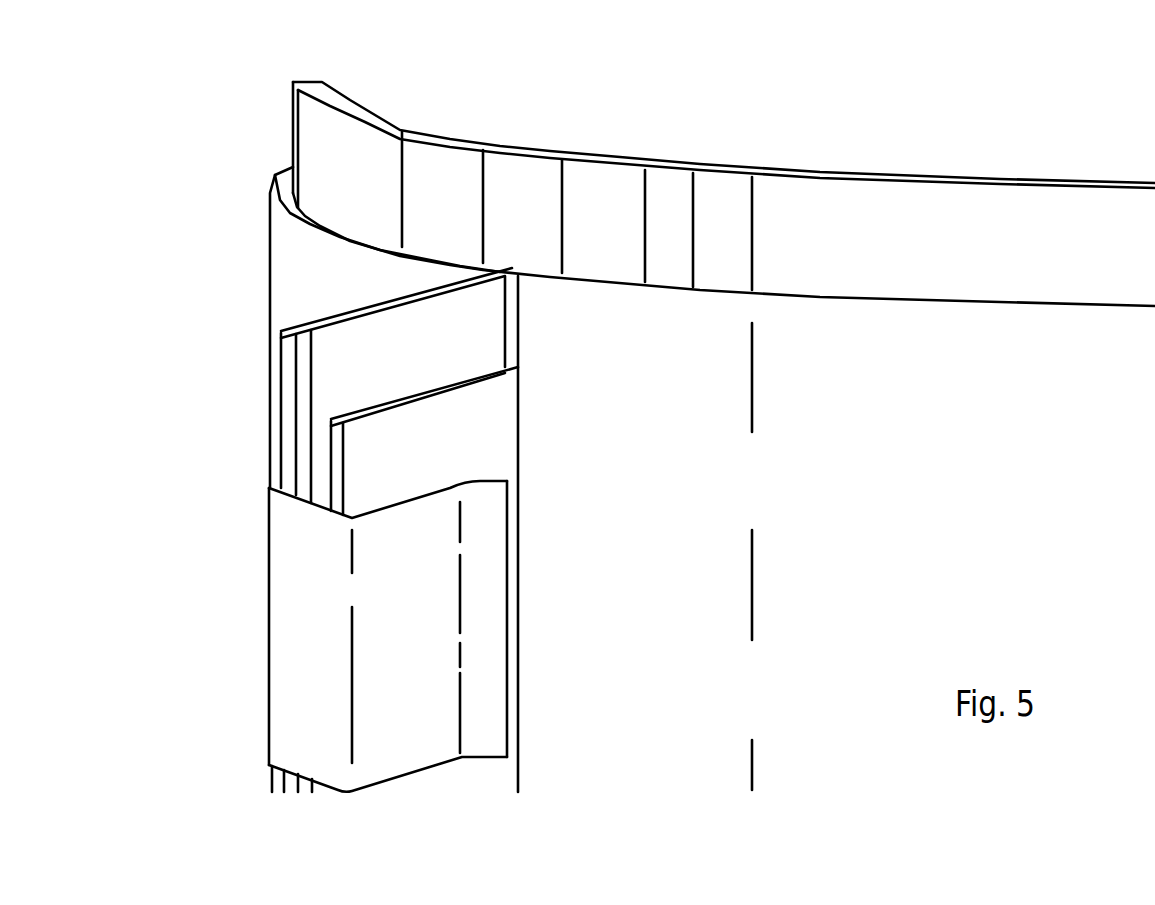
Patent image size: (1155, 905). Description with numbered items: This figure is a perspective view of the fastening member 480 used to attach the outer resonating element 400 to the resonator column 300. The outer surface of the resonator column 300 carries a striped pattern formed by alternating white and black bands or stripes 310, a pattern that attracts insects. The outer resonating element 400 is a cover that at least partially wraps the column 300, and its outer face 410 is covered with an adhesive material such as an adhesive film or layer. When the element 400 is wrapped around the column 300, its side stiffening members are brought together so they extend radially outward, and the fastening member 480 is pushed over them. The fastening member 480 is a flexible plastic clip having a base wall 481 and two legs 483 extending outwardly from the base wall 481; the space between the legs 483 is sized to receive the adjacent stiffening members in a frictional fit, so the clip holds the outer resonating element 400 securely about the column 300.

The resonator column 300 is at (902, 172).
The bands or stripes 310 is at (530, 185).
The outer resonating element 400 is at (262, 270).
The outer face 410 is at (956, 454).
The fastening member 480 is at (295, 593).
The base wall 481 is at (292, 547).
The legs 483 is at (413, 612).